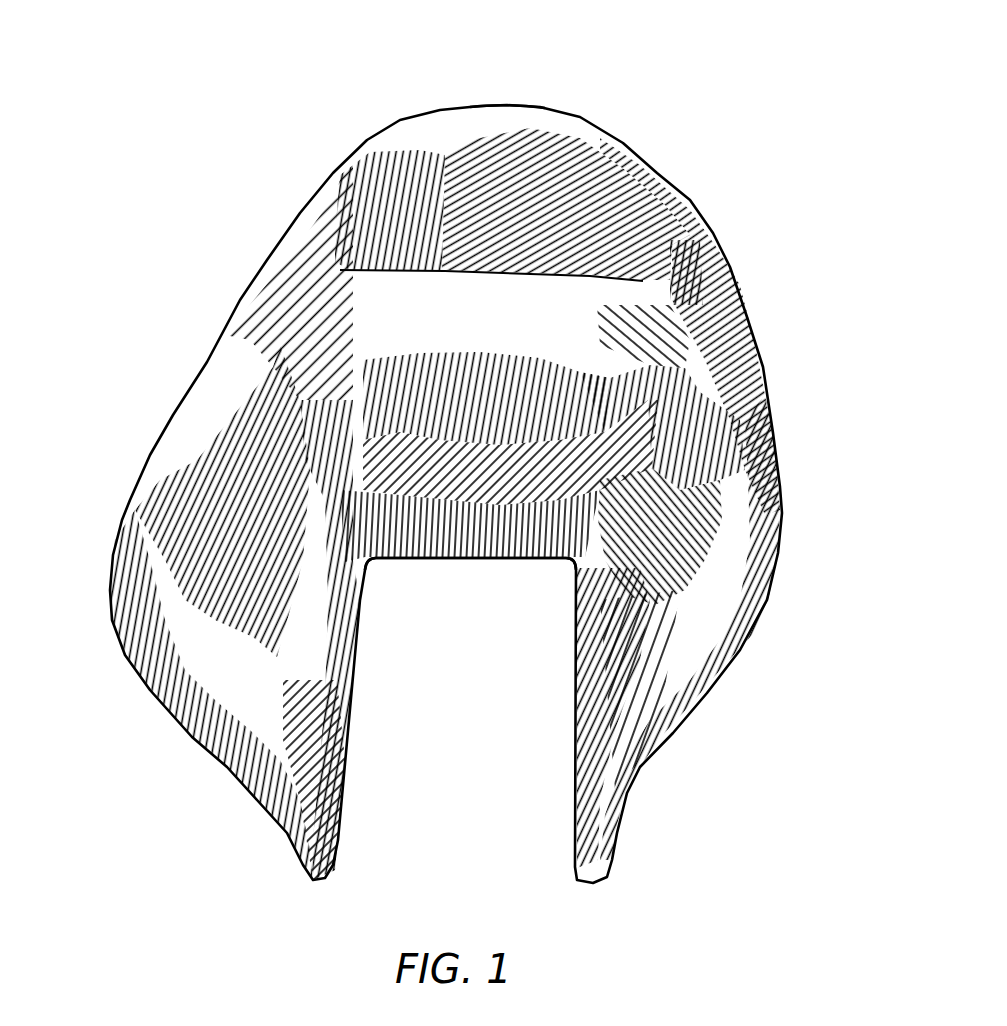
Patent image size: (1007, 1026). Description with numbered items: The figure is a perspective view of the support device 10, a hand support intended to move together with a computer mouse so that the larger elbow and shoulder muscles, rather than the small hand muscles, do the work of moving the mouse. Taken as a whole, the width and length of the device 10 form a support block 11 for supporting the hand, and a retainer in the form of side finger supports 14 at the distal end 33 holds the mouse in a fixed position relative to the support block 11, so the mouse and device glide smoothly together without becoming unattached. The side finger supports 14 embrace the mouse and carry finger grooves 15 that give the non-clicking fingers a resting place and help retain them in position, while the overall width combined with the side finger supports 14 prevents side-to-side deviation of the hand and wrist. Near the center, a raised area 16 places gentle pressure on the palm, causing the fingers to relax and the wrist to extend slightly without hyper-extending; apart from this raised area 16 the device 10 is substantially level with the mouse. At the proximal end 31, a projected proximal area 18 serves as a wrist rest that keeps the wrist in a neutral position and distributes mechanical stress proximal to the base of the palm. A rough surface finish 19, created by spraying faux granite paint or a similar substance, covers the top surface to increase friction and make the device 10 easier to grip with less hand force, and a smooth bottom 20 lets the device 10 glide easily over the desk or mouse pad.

The support device 10 is at (745, 60).
The support block 11 is at (292, 302).
The side finger supports 14 is at (297, 750).
The finger grooves 15 is at (240, 577).
The raised area 16 is at (490, 403).
The projected proximal area 18 is at (453, 152).
The rough surface finish 19 is at (675, 247).
The smooth bottom 20 is at (122, 512).
The proximal end 31 is at (522, 107).
The distal end 33 is at (540, 887).